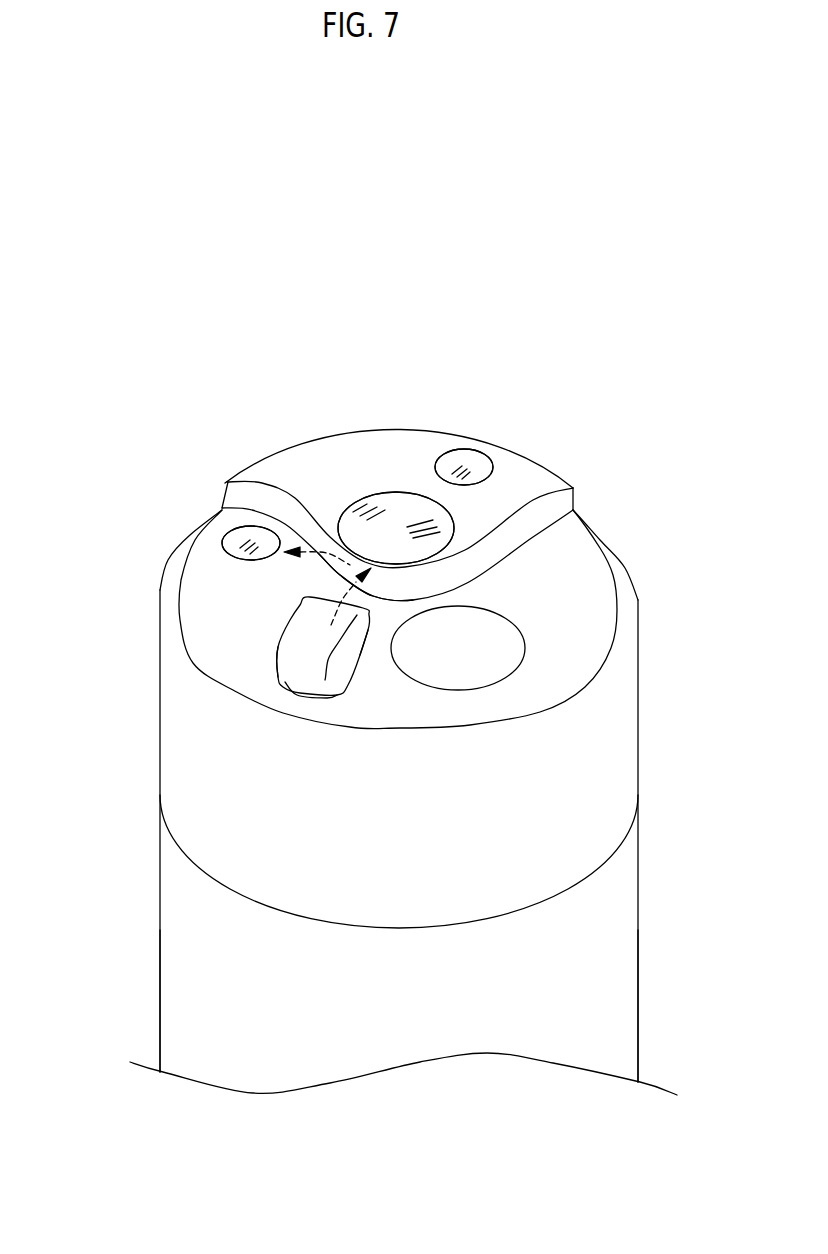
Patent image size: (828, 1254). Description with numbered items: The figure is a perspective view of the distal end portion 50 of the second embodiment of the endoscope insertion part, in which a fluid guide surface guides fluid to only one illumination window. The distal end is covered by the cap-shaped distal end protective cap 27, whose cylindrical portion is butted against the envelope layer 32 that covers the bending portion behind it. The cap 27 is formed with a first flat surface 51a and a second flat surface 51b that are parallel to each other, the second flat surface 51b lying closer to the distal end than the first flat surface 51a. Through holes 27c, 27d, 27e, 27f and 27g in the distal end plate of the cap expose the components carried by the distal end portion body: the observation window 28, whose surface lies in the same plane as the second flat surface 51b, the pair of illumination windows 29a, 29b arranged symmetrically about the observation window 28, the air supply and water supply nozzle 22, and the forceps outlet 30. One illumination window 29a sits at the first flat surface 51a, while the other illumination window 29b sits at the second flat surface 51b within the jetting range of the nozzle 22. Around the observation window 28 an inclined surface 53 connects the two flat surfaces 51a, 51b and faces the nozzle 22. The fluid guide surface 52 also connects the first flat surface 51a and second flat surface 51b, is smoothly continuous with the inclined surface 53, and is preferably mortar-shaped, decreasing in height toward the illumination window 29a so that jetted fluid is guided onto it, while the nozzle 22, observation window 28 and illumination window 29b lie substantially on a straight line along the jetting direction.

The distal end portion 50 is at (562, 250).
The distal end protective cap 27 is at (613, 760).
The envelope layer 32 is at (633, 973).
The through hole 27c is at (633, 577).
The first flat surface 51a is at (243, 663).
The second flat surface 51b is at (378, 450).
The fluid guide surface 52 is at (277, 500).
The inclined surface 53 is at (368, 560).
The through hole 27d is at (450, 537).
The observation window 28 is at (405, 505).
The through hole 27f is at (455, 450).
The illumination window 29b is at (482, 465).
The through hole 27e is at (250, 562).
The illumination window 29a is at (250, 530).
The air supply and water supply nozzle 22 is at (297, 645).
The through hole 27g is at (323, 697).
The forceps outlet 30 is at (472, 670).